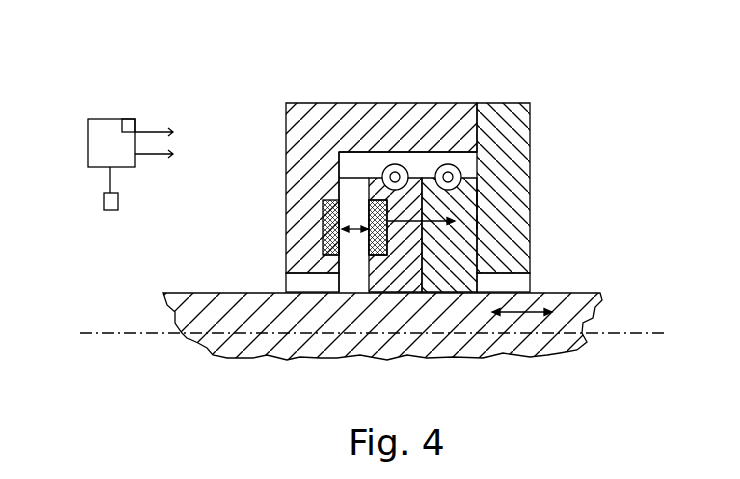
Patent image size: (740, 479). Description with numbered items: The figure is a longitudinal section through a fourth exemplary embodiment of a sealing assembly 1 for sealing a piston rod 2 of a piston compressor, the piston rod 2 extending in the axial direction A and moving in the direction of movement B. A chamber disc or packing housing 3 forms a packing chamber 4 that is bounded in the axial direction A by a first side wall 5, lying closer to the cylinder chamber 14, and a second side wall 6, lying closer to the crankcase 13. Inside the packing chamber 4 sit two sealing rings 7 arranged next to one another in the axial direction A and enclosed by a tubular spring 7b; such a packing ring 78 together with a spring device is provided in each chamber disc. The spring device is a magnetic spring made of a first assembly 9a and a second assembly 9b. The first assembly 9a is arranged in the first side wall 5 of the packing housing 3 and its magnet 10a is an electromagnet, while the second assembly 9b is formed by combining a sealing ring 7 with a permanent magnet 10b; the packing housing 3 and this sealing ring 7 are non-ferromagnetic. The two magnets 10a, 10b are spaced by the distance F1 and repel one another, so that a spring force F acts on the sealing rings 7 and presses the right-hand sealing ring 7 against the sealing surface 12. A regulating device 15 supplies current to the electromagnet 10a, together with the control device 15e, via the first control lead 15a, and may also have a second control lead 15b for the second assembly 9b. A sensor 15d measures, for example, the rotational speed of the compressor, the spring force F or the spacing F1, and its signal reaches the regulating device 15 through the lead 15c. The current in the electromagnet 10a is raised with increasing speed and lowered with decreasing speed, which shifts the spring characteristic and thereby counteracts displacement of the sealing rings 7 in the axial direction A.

The sealing assembly 1 is at (547, 94).
The piston rod 2 is at (228, 349).
The packing housing 3 is at (305, 102).
The packing chamber 4 is at (376, 158).
The first side wall 5 is at (338, 173).
The second side wall 6 is at (480, 253).
The sealing ring 7 is at (398, 224).
The tubular spring 7b is at (397, 163).
The packing ring 78 is at (481, 204).
The first assembly 9a is at (323, 208).
The second assembly 9b is at (350, 258).
The electromagnet 10a is at (323, 233).
The permanent magnet 10b is at (367, 256).
The sealing surface 12 is at (480, 222).
The crankcase 13 is at (660, 287).
The cylinder chamber 14 is at (142, 288).
The regulating device 15 is at (124, 157).
The first control lead 15a is at (149, 132).
The second control lead 15b is at (158, 155).
The lead 15c is at (105, 197).
The sensor 15d is at (109, 192).
The control device 15e is at (123, 120).
The distance F1 is at (353, 224).
The spring force F is at (376, 272).
The direction of movement B is at (530, 320).
The axial direction A is at (626, 334).